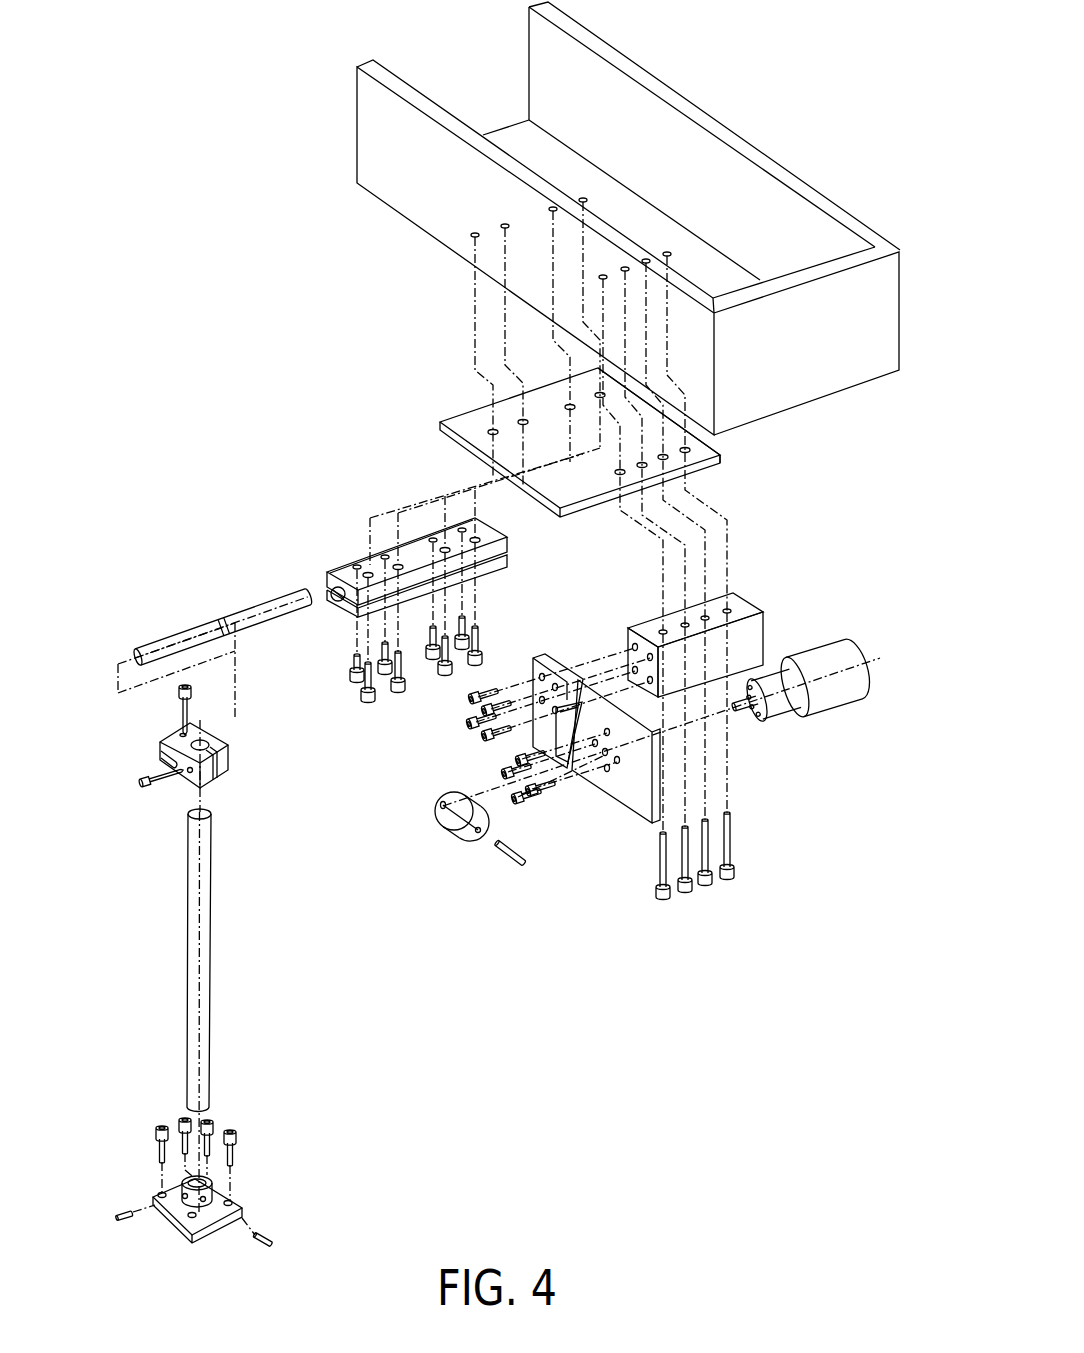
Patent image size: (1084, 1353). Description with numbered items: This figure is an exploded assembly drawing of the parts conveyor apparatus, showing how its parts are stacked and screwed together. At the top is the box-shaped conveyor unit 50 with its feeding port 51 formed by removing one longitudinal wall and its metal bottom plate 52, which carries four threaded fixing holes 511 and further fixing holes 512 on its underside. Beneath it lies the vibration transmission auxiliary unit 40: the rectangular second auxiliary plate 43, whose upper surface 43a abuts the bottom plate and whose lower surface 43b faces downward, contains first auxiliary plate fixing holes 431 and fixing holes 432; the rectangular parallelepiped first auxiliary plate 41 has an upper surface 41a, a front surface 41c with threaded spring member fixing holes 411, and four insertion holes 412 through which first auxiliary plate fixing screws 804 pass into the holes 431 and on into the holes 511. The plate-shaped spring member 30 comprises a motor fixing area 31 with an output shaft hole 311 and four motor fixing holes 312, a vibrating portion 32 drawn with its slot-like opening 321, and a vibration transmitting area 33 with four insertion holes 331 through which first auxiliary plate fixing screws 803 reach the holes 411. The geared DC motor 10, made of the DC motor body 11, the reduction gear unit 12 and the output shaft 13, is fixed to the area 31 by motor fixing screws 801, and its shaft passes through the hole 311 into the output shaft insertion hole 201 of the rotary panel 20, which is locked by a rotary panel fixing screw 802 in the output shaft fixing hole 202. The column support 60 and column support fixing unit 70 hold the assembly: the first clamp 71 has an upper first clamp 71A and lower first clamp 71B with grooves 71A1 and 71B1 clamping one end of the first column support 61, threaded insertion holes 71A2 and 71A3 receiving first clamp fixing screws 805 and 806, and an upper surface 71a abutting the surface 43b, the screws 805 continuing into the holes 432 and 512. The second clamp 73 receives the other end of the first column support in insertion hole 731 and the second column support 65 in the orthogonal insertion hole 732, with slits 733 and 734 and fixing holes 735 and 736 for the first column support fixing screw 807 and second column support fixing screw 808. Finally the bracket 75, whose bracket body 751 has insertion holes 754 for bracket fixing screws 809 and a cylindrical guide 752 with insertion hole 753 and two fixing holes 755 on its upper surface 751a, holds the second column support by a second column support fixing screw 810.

The DC motor 10 is at (808, 725).
The DC motor body 11 is at (838, 698).
The reduction gear unit 12 is at (782, 713).
The output shaft 13 is at (764, 733).
The rotary panel 20 is at (424, 840).
The output shaft insertion hole 201 is at (440, 806).
The output shaft fixing hole 202 is at (475, 836).
The spring member 30 is at (548, 765).
The motor fixing area 31 is at (605, 802).
The output shaft hole 311 is at (595, 750).
The motor fixing holes 312 is at (607, 772).
The vibrating portion 32 is at (554, 779).
The slot 321 is at (556, 762).
The vibration transmitting area 33 is at (510, 687).
The insertion holes 331 is at (537, 677).
The vibration transmission auxiliary unit 40 is at (599, 514).
The first auxiliary plate 41 is at (710, 622).
The upper surface 41a is at (740, 610).
The front surface 41c is at (633, 645).
The spring member fixing holes 411 is at (632, 667).
The insertion holes 412 is at (730, 609).
The second auxiliary plate 43 is at (590, 424).
The upper surface 43a is at (580, 438).
The lower surface 43b is at (466, 452).
The first auxiliary plate fixing holes 431 is at (722, 458).
The fixing holes 432 is at (492, 430).
The conveyor unit 50 is at (621, 218).
The feeding port 51 is at (529, 48).
The bottom plate 52 is at (574, 148).
The fixing holes 511 is at (670, 254).
The fixing holes 512 is at (471, 236).
The column support 60 is at (242, 865).
The first column support 61 is at (163, 643).
The second column support 65 is at (205, 942).
The column support fixing unit 70 is at (331, 849).
The first clamp 71 is at (384, 552).
The upper first clamp 71A is at (410, 521).
The lower first clamp 71B is at (371, 610).
The groove 71A1 is at (357, 565).
The insertion holes 71A2 is at (367, 572).
The insertion holes 71A3 is at (383, 558).
The groove 71B1 is at (338, 601).
The upper surface 71a is at (493, 535).
The second clamp 73 is at (190, 783).
The insertion hole 731 is at (161, 760).
The insertion hole 732 is at (218, 748).
The slit 733 is at (163, 741).
The slit 734 is at (229, 765).
The fixing hole 735 is at (209, 742).
The fixing hole 736 is at (189, 773).
The bracket 75 is at (257, 1173).
The bracket body 751 is at (263, 1211).
The upper surface 751a is at (180, 1207).
The guide 752 is at (255, 1160).
The insertion hole 753 is at (201, 1180).
The insertion holes 754 is at (240, 1203).
The fixing holes 755 is at (207, 1199).
The motor fixing screws 801 is at (503, 773).
The rotary panel fixing screw 802 is at (510, 862).
The first auxiliary plate fixing screws 803 is at (470, 700).
The first auxiliary plate fixing screws 804 is at (723, 842).
The first clamp fixing screws 805 is at (370, 703).
The first clamp fixing screws 806 is at (352, 682).
The first column support fixing screw 807 is at (193, 695).
The second column support fixing screw 808 is at (143, 790).
The bracket fixing screws 809 is at (213, 1130).
The second column support fixing screw 810 is at (273, 1240).